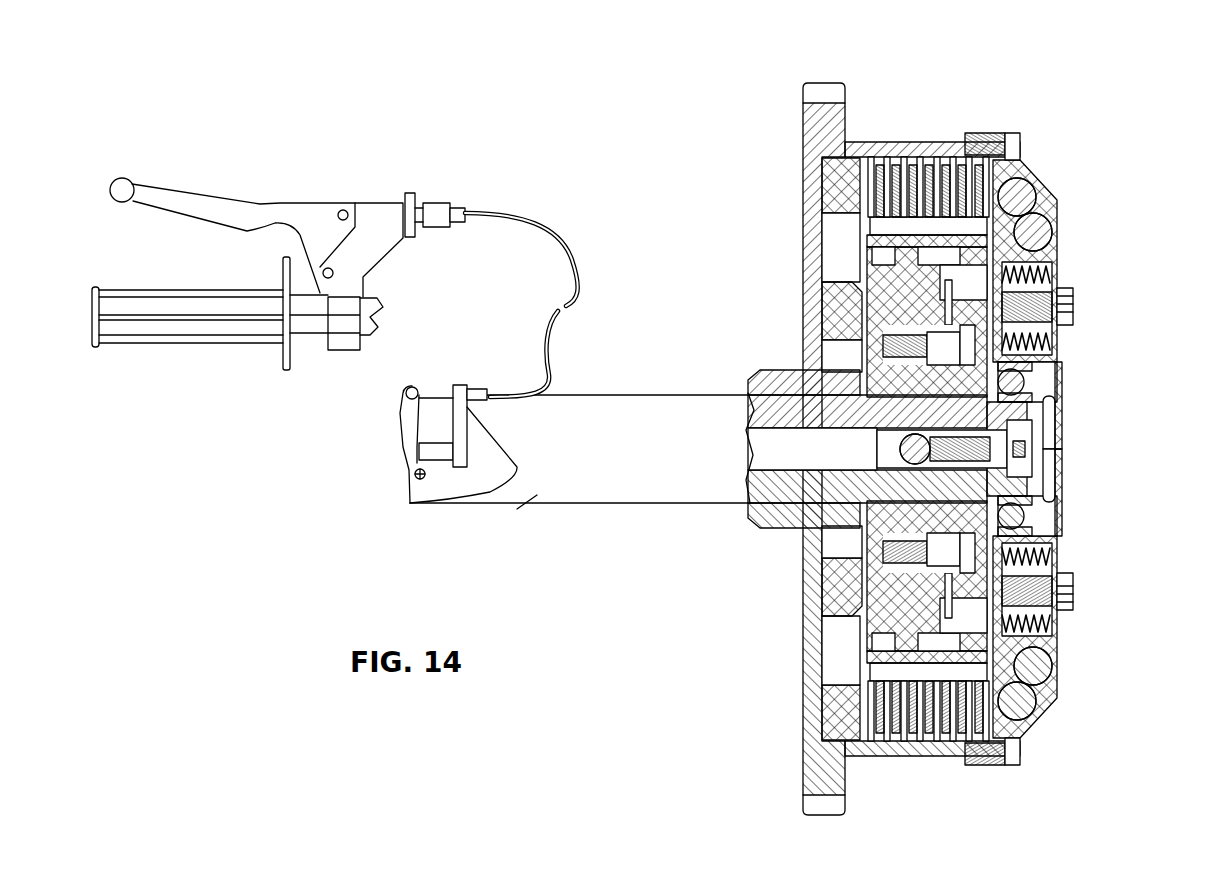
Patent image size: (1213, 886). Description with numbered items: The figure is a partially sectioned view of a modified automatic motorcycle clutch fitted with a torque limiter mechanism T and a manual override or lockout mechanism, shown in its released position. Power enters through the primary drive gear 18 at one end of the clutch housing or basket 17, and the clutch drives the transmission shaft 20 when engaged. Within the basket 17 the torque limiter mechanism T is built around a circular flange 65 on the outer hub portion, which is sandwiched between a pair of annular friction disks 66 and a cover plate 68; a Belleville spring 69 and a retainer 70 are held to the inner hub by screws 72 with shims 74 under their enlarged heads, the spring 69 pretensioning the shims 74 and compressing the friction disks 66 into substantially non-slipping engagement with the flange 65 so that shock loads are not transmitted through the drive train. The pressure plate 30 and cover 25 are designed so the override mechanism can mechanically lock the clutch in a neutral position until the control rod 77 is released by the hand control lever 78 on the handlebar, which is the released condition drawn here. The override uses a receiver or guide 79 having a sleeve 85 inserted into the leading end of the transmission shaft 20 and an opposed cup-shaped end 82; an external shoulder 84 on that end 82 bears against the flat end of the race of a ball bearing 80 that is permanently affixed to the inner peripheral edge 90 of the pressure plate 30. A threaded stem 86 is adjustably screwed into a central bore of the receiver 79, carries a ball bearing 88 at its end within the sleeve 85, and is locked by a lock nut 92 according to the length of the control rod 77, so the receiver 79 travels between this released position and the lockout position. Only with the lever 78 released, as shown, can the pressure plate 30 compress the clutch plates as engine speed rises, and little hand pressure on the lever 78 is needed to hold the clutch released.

The clutch housing or basket 17 is at (903, 140).
The primary drive gear 18 is at (802, 117).
The transmission shaft 20 is at (537, 497).
The cover 25 is at (1053, 702).
The pressure plate 30 is at (1032, 645).
The circular flange 65 is at (903, 635).
The annular friction disks 66 is at (897, 615).
The cover plate 68 is at (1027, 720).
The Belleville spring 69 is at (945, 305).
The retainer 70 is at (958, 573).
The screws 72 is at (1020, 332).
The shims 74 is at (967, 345).
The control rod 77 is at (797, 447).
The hand control lever 78 is at (303, 202).
The receiver or guide 79 is at (1025, 483).
The ball bearing 80 is at (1030, 500).
The cup-shaped end 82 is at (997, 418).
The external shoulder 84 is at (1035, 512).
The sleeve 85 is at (888, 425).
The threaded stem 86 is at (1037, 450).
The ball bearing 88 is at (925, 452).
The inner peripheral edge 90 is at (1055, 362).
The lock nut 92 is at (1020, 445).
The torque limiter mechanism T is at (862, 640).